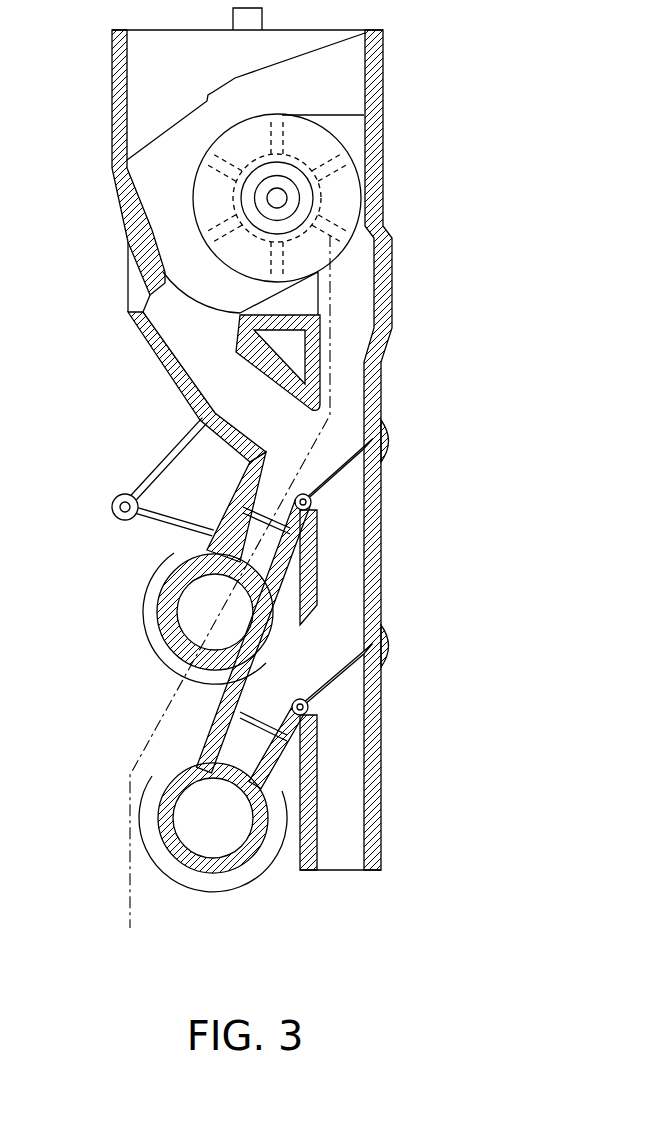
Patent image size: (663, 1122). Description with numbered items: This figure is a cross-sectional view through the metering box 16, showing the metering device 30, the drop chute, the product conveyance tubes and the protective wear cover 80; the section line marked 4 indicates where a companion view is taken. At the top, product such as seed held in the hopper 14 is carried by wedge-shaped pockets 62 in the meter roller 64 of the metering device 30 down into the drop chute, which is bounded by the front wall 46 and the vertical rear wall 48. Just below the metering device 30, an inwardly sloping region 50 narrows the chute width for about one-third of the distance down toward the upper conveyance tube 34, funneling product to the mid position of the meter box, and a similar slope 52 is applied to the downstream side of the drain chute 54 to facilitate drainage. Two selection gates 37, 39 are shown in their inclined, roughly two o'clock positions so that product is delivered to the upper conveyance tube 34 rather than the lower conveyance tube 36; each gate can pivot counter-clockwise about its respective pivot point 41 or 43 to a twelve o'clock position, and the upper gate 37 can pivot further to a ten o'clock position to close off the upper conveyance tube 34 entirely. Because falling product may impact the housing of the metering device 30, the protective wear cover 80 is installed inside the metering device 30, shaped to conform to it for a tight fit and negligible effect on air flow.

The hopper 14 is at (177, 87).
The metering box 16 is at (466, 273).
The metering device 30 is at (343, 201).
The upper conveyance tube 34 is at (143, 612).
The product conveyance tube 36 is at (240, 882).
The upper selection gate 37 is at (347, 467).
The selection gate 39 is at (340, 680).
The pivot point 41 is at (313, 501).
The pivot point 43 is at (315, 712).
The front wall 46 is at (177, 398).
The rear wall 48 is at (383, 337).
The inwardly sloping region 50 is at (364, 321).
The slope 52 is at (256, 404).
The drain chute 54 is at (188, 347).
The wedge-shaped pockets 62 is at (253, 258).
The meter roller 64 is at (363, 163).
The protective wear cover 80 is at (230, 548).
The section line 4- 4 is at (318, 248).